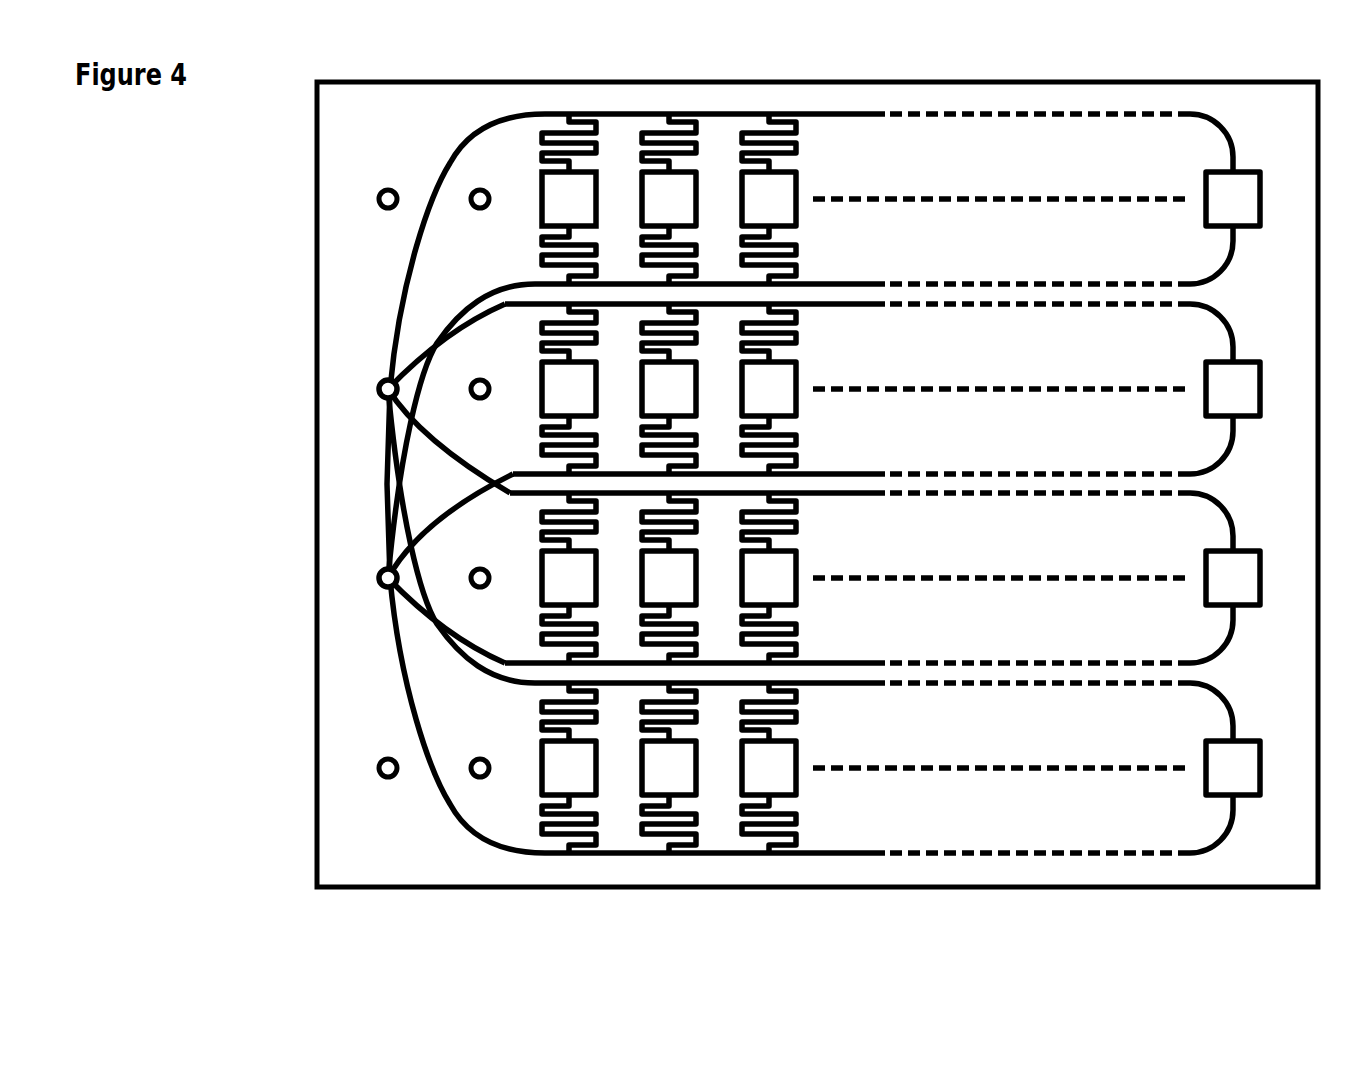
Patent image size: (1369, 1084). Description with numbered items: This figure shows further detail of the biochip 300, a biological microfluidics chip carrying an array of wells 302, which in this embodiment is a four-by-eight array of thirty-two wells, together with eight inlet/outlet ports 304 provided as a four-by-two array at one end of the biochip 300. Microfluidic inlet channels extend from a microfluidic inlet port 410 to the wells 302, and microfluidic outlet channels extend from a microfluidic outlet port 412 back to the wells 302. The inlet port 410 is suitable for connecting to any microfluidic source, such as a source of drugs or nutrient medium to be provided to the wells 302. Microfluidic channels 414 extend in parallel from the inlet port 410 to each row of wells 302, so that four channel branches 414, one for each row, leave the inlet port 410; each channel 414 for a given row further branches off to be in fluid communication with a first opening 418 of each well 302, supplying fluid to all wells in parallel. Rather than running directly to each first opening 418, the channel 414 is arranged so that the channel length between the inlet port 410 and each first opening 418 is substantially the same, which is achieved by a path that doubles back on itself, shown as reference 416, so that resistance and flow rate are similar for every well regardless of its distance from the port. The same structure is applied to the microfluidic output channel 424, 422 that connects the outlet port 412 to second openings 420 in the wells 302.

The biochip 300 is at (298, 852).
The wells 302 is at (1280, 897).
The inlet/outlet ports 304 is at (507, 897).
The microfluidic inlet port 410 is at (372, 382).
The microfluidic outlet port 412 is at (372, 586).
The microfluidic channels 414 is at (404, 256).
The doubled-back channel path 416 is at (805, 125).
The first opening 418 is at (568, 190).
The second opening 420 is at (586, 209).
The microfluidic output channel 422 is at (800, 803).
The microfluidic output channel 424 is at (722, 862).